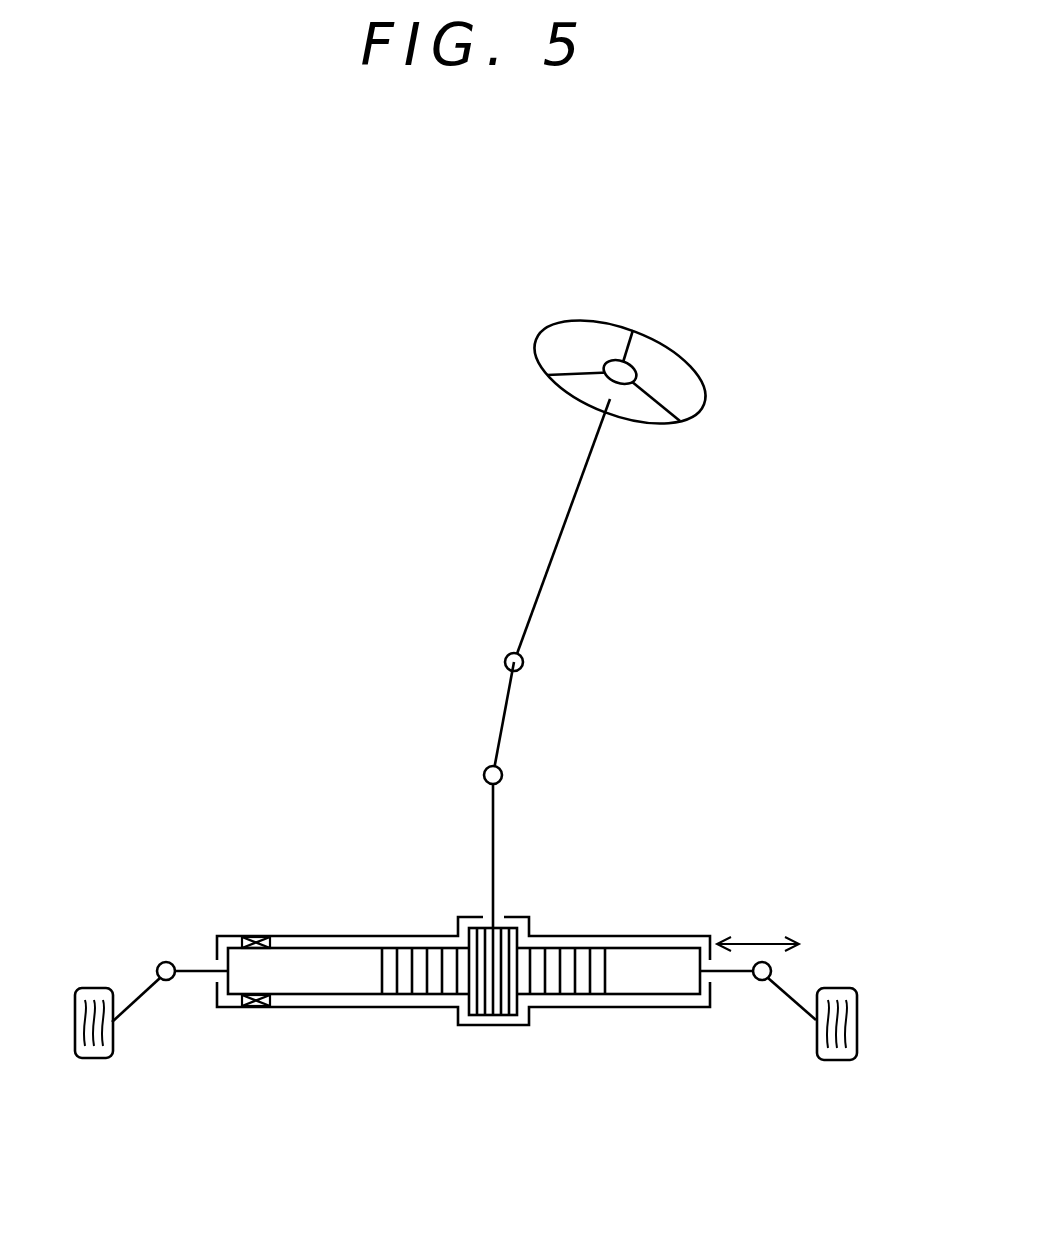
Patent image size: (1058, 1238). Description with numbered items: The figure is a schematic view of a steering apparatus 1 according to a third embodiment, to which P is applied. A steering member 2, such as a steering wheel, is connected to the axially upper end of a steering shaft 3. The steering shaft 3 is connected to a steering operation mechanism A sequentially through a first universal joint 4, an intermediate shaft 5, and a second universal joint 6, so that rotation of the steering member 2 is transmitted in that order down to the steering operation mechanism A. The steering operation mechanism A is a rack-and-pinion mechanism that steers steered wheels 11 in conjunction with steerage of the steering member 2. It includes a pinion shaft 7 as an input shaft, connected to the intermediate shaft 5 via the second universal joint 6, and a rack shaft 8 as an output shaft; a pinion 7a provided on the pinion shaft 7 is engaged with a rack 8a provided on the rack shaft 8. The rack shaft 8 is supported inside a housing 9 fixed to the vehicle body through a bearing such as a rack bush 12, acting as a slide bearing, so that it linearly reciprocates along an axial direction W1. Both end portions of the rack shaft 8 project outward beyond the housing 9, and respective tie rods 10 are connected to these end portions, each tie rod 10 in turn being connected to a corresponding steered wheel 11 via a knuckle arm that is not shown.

The steering apparatus 1 is at (704, 326).
The steering member 2 is at (594, 320).
The steering shaft 3 is at (567, 515).
The first universal joint 4 is at (523, 660).
The intermediate shaft 5 is at (503, 718).
The second universal joint 6 is at (503, 778).
The pinion shaft 7 is at (497, 865).
The pinion 7a is at (481, 1014).
The rack shaft 8 is at (571, 1000).
The rack 8a is at (420, 995).
The housing 9 is at (357, 936).
The tie rod 10 is at (142, 998).
The steered wheel 11 is at (94, 1062).
The rack bush 12 is at (252, 936).
The element P is at (480, 771).
The steering operation mechanism A is at (523, 1031).
The axial direction W1 is at (755, 943).